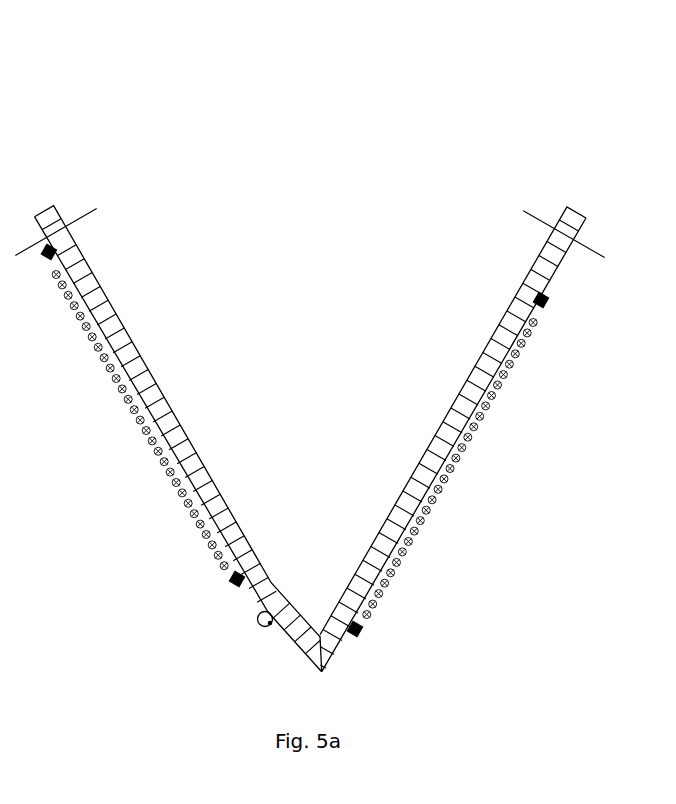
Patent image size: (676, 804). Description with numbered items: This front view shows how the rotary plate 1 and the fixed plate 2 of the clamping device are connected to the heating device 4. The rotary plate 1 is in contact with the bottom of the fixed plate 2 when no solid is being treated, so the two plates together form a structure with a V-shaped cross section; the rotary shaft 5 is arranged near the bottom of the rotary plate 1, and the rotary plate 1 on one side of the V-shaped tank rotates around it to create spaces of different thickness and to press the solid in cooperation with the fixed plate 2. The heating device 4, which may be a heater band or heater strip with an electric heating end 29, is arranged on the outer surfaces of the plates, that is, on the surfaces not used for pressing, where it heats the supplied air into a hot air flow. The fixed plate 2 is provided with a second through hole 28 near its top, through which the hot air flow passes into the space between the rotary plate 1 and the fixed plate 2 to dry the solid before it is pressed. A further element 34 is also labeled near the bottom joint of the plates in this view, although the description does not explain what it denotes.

The rotary plate 1 is at (78, 272).
The fixed plate 2 is at (429, 433).
The heating device 4 is at (118, 374).
The rotary shaft 5 is at (266, 604).
The second through hole 28 is at (541, 295).
The electric heating end 29 is at (234, 576).
The apex joint 34 is at (312, 636).